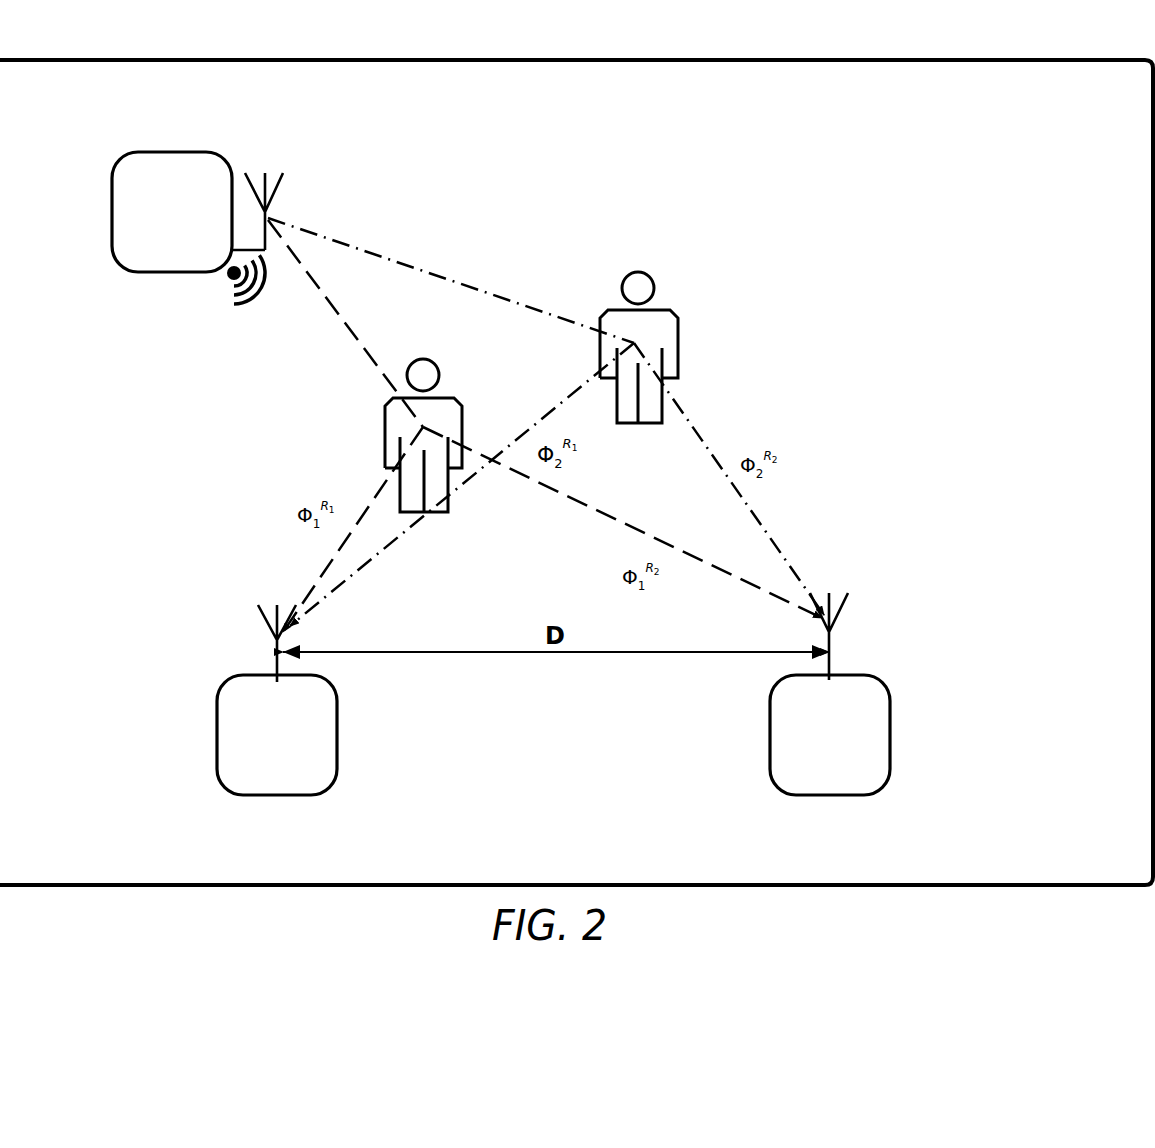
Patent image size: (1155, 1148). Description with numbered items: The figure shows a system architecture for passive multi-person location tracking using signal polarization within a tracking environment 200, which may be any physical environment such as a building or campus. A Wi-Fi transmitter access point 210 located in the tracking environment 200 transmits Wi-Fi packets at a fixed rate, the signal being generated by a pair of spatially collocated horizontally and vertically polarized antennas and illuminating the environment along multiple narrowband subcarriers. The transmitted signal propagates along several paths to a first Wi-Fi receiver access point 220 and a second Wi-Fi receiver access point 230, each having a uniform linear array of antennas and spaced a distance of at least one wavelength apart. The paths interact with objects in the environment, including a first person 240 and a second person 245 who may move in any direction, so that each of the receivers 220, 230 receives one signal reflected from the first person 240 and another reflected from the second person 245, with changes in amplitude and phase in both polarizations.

The tracking environment 200 is at (672, 96).
The Wi-Fi transmitter access point 210 is at (220, 152).
The first Wi-Fi receiver access point 220 is at (337, 723).
The second Wi-Fi receiver access point 230 is at (890, 725).
The first person 240 is at (455, 397).
The second person 245 is at (672, 317).